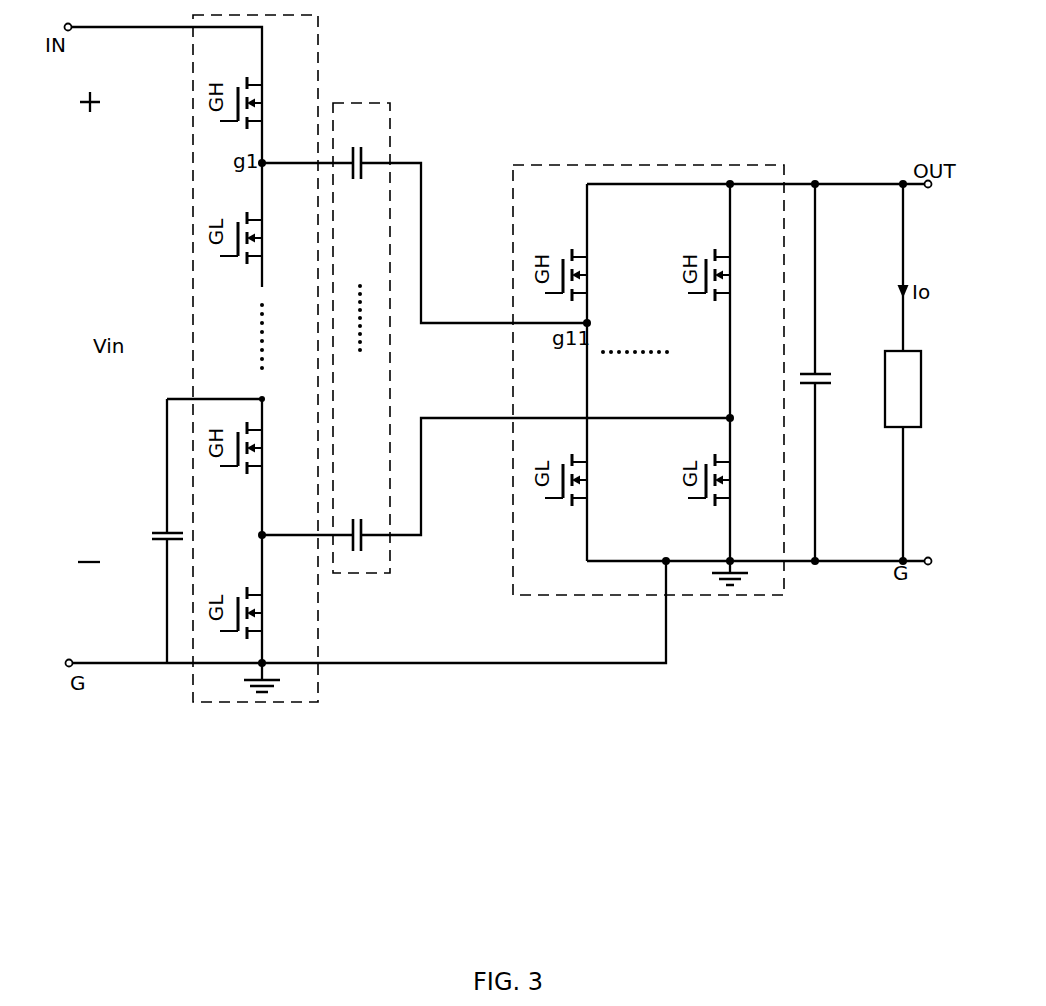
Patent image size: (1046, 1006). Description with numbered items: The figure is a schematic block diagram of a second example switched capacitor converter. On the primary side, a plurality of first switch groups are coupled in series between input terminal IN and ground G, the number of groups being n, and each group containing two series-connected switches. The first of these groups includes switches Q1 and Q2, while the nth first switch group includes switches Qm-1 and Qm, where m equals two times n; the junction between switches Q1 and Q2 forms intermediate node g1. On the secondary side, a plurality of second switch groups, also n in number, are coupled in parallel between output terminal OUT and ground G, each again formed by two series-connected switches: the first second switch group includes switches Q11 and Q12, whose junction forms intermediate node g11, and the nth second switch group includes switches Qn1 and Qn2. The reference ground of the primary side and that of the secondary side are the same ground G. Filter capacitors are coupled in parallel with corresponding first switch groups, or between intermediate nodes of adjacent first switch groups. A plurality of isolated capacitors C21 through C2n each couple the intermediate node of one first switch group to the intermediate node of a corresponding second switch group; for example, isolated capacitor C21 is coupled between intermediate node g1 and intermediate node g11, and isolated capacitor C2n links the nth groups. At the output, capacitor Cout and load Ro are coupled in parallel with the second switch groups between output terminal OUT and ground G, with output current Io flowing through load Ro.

The switch Q1 is at (259, 103).
The switch Q2 is at (259, 238).
The switch Qm-1 is at (269, 452).
The switch Qm is at (260, 613).
The switch Q11 is at (588, 275).
The switch Q12 is at (588, 480).
The switch Qn1 is at (731, 275).
The switch Qn2 is at (731, 480).
The isolated capacitor C21 is at (358, 149).
The isolated capacitor C2n is at (358, 519).
The output capacitor Cout is at (833, 396).
The load Ro is at (917, 389).
The output current Io is at (903, 291).
The intermediate node g1 is at (262, 163).
The intermediate node g11 is at (587, 323).
The input terminal IN is at (68, 27).
The output terminal OUT is at (928, 184).
The ground G is at (499, 612).